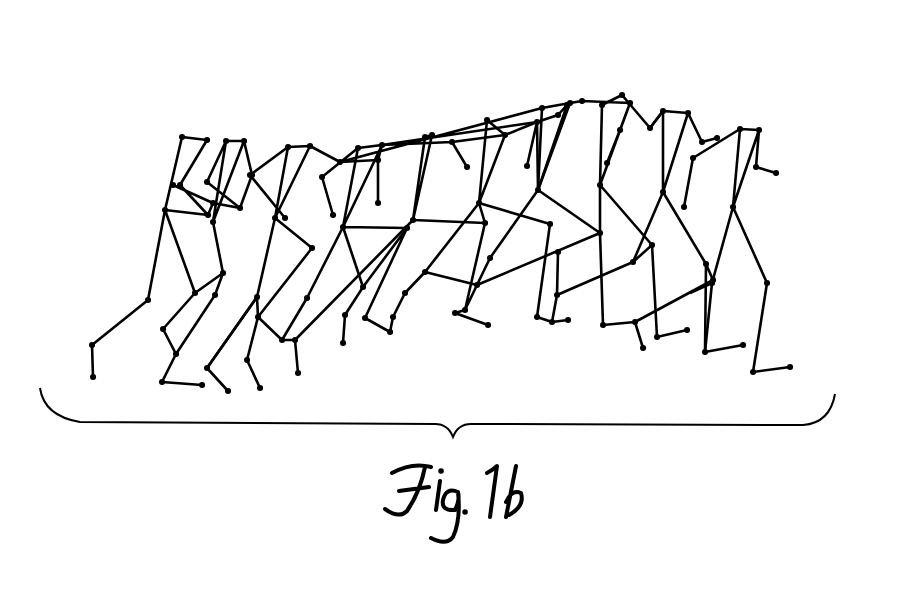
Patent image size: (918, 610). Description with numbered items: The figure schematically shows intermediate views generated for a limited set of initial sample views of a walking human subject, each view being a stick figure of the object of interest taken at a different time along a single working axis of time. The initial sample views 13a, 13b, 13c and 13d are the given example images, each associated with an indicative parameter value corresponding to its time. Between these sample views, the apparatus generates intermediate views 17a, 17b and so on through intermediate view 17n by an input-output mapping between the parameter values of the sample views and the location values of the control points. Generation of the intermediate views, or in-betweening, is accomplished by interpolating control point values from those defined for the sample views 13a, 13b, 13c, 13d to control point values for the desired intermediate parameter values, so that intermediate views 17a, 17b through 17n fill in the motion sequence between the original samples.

The sample view 13a is at (183, 126).
The intermediate view 17a is at (235, 130).
The intermediate view 17b is at (297, 133).
The sample view 13b is at (425, 127).
The sample view 13c is at (557, 95).
The intermediate view 17n is at (675, 97).
The sample view 13d is at (752, 117).